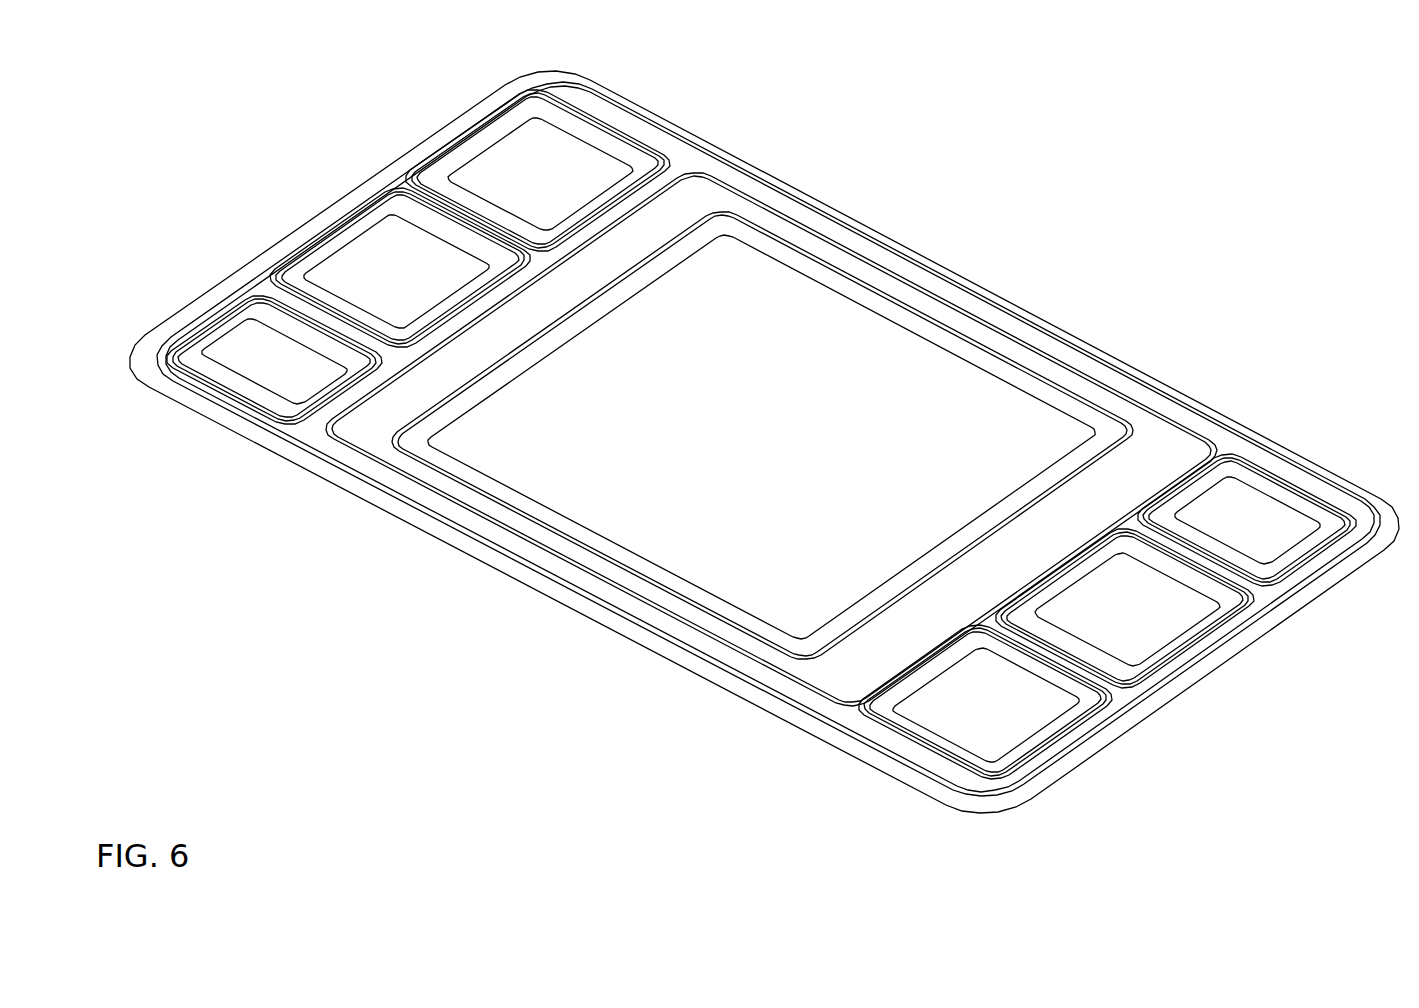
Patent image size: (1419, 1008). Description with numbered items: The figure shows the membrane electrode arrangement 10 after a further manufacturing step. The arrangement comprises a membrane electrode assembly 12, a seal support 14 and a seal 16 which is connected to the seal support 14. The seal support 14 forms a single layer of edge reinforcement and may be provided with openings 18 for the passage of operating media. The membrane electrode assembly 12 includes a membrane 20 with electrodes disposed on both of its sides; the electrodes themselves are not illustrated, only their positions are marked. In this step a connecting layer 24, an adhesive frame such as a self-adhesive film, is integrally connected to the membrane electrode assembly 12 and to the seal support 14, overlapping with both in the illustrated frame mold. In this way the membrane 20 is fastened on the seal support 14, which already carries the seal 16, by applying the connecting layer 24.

The membrane electrode arrangement 10 is at (1120, 143).
The membrane electrode assembly 12 is at (810, 341).
The seal support 14 is at (701, 211).
The seal 16 is at (655, 150).
The openings 18 is at (490, 177).
The membrane 20 is at (810, 341).
The connecting layer 24 is at (922, 332).